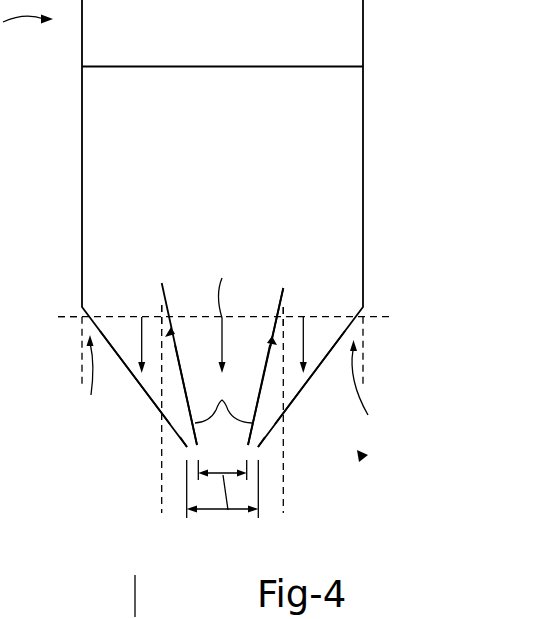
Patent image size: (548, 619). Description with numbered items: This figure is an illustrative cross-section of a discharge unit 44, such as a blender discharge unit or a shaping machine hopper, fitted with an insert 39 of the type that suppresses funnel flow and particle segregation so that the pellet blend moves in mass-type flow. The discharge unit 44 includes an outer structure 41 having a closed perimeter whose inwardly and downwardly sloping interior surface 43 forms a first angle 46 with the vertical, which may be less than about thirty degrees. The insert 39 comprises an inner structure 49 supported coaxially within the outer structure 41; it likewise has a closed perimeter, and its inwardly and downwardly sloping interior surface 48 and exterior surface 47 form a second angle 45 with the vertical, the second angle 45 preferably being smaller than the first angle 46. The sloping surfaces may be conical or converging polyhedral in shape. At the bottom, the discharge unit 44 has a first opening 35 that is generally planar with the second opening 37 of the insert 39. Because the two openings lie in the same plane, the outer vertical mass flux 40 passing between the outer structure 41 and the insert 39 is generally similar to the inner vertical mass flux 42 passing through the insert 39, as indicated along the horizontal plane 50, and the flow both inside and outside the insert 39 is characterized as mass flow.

The first opening 35 is at (208, 510).
The second opening 37 is at (228, 510).
The insert 39 is at (267, 295).
The outer vertical mass flux 40 is at (142, 327).
The outer structure 41 is at (133, 377).
The inner vertical mass flux 42 is at (222, 310).
The interior surface 43 is at (153, 390).
The discharge unit 44 is at (363, 458).
The second angle 45 is at (172, 332).
The first angle 46 is at (230, 383).
The exterior surface 47 is at (162, 305).
The interior surface 48 is at (223, 399).
The inner structure 49 is at (183, 437).
The horizontal plane 50 is at (67, 313).